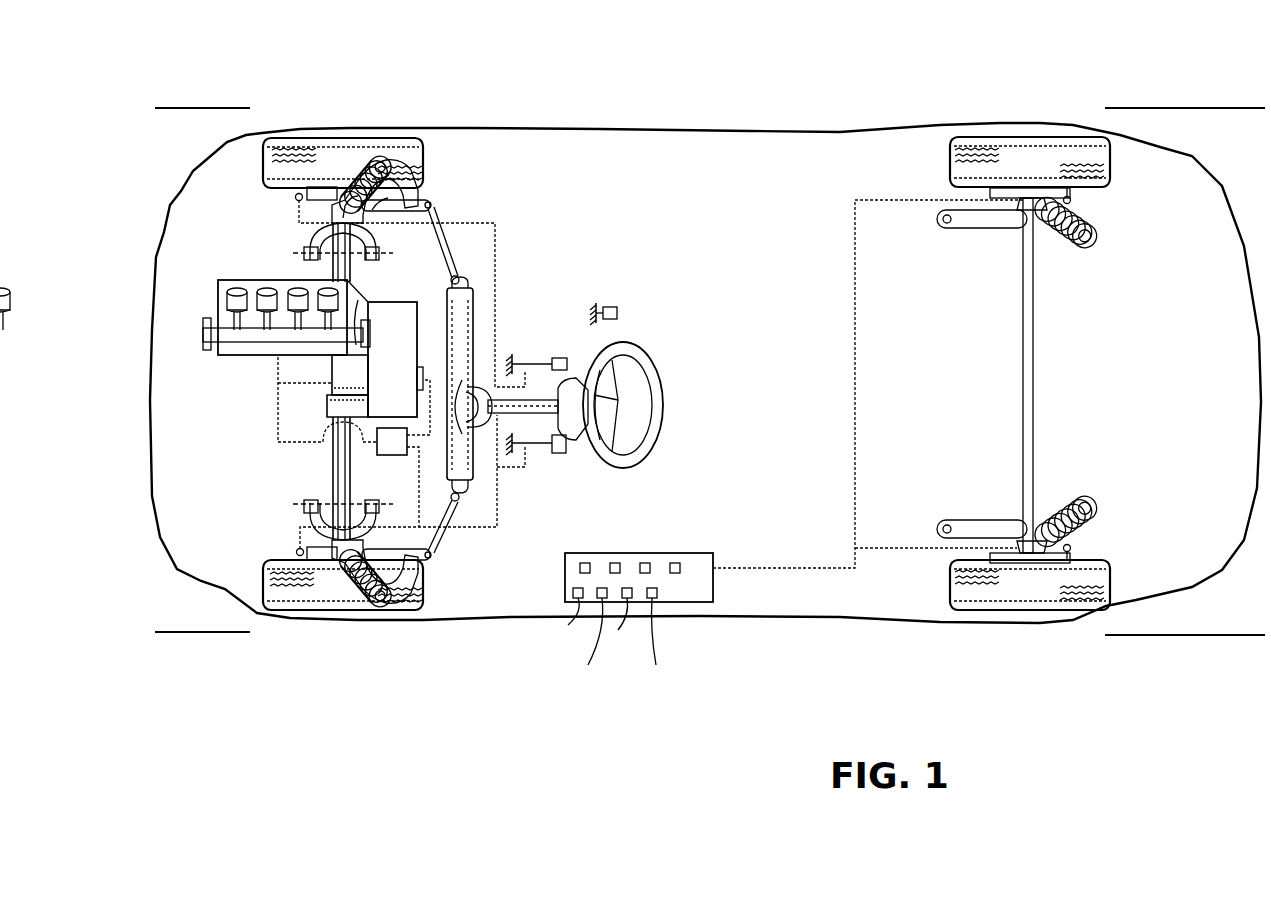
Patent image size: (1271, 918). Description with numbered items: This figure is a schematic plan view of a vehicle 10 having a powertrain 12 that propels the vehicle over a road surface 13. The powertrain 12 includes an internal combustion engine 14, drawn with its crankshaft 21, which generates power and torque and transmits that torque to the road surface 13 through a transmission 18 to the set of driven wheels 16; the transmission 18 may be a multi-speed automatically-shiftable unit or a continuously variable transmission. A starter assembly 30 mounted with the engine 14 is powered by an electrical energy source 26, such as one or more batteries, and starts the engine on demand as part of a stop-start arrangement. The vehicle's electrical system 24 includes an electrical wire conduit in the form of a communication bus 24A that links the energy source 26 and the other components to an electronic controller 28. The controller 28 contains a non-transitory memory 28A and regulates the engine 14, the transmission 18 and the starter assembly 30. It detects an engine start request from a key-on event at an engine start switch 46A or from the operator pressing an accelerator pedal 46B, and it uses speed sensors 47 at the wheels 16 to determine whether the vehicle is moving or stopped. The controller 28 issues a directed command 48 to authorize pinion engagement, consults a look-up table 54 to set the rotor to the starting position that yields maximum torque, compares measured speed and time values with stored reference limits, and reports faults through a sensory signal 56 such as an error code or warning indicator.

The vehicle 10 is at (552, 104).
The powertrain 12 is at (216, 282).
The road surface 13 is at (178, 151).
The internal combustion engine 14 is at (278, 280).
The driven wheels 16 is at (313, 136).
The transmission 18 is at (405, 358).
The crankshaft 21 is at (358, 304).
The electrical system 24 is at (541, 546).
The communication bus 24A is at (302, 385).
The electrical energy source 26 is at (404, 452).
The electronic controller 28 is at (713, 560).
The memory 28A is at (676, 562).
The starter assembly 30 is at (361, 384).
The engine start switch 46A is at (618, 313).
The accelerator pedal 46B is at (560, 356).
The speed sensors 47 is at (296, 199).
The directed command 48 is at (644, 562).
The look-up table 54 is at (614, 562).
The sensory signal 56 is at (584, 562).